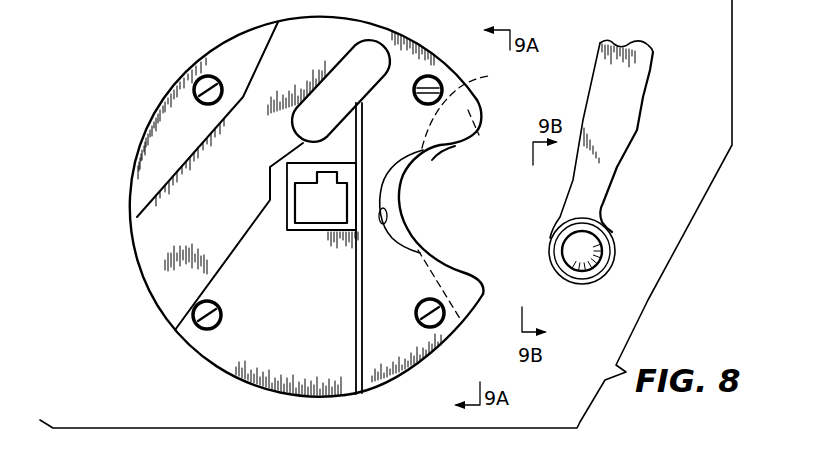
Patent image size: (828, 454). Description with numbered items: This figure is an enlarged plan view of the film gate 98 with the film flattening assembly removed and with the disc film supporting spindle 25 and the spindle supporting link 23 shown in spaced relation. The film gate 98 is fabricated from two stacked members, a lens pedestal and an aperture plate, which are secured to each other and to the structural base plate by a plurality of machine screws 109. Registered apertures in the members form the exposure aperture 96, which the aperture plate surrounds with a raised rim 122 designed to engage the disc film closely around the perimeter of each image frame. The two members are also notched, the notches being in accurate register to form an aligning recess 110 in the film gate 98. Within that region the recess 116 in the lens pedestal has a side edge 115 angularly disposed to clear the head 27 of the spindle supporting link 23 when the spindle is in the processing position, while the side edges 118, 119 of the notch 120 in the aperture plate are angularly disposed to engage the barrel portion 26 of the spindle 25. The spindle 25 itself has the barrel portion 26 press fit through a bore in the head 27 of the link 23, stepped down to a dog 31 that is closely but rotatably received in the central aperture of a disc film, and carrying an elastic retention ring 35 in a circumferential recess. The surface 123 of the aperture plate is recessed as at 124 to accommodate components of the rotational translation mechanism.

The spindle supporting link 23 is at (640, 100).
The disc film supporting spindle 25 is at (672, 212).
The barrel portion 26 is at (606, 277).
The head 27 is at (617, 240).
The dog 31 is at (597, 232).
The elastic retention ring 35 is at (563, 260).
The exposure aperture 96 is at (316, 204).
The film gate 98 is at (208, 366).
The machine screws 109 is at (200, 78).
The aligning recess 110 is at (412, 200).
The side edge 115 is at (479, 88).
The recess 116 is at (410, 163).
The side edge 118 is at (471, 276).
The side edge 119 is at (440, 158).
The notch 120 is at (384, 224).
The raised rim 122 is at (316, 230).
The surface 123 is at (280, 384).
The recess 124 is at (158, 291).